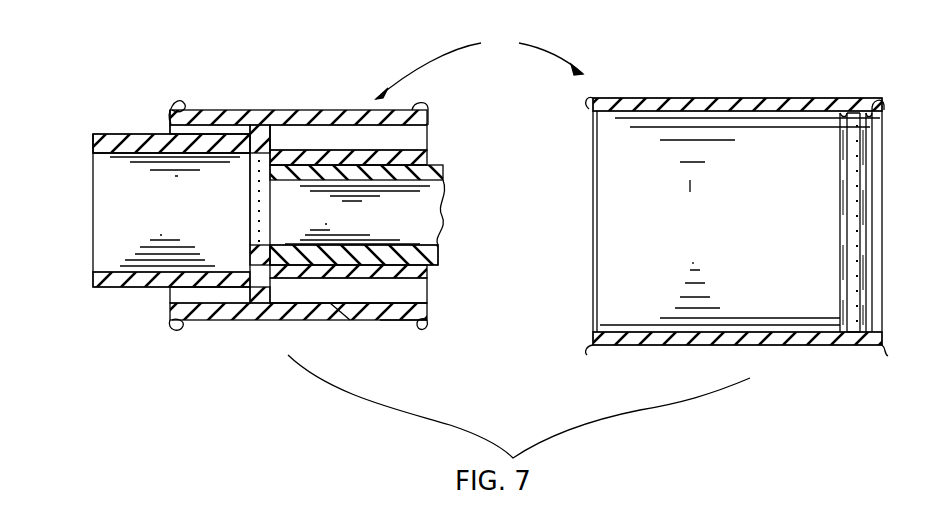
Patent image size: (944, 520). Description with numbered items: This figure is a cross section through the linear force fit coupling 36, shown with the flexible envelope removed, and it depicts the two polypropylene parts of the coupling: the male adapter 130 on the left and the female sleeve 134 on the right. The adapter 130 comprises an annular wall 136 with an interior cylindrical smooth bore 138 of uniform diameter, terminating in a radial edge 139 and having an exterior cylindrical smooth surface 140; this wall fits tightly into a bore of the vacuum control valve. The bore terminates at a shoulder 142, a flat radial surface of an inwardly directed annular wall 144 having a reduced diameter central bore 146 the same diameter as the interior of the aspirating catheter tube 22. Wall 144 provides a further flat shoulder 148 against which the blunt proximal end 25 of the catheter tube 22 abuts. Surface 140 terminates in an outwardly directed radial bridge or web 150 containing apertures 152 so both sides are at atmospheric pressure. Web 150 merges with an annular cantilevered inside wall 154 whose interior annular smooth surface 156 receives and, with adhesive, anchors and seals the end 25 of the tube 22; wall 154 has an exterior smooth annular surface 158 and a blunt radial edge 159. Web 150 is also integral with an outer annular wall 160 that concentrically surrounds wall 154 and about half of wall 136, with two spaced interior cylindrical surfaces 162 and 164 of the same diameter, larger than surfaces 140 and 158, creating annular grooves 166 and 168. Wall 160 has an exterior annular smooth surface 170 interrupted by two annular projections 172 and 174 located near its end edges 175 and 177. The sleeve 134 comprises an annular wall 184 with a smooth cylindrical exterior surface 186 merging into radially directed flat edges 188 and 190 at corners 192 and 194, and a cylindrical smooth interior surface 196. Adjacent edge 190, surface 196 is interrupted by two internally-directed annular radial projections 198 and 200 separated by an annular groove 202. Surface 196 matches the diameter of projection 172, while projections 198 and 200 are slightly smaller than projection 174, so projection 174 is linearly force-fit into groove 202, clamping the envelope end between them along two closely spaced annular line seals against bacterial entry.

The aspirating catheter tube 22 is at (433, 258).
The proximal end of the aspirating catheter tube 25 is at (290, 184).
The linear force fit coupling 36 is at (479, 65).
The male adapter 130 is at (142, 298).
The female sleeve 134 is at (684, 92).
The annular wall 136 is at (113, 146).
The interior cylindrical smooth bore 138 is at (135, 152).
The radial edge 139 is at (93, 144).
The exterior cylindrical smooth surface 140 is at (112, 287).
The shoulder 142 is at (250, 170).
The inwardly directed annular wall 144 is at (256, 250).
The central bore 146 is at (258, 195).
The flat shoulder 148 is at (276, 243).
The radial bridge or web 150 is at (280, 293).
The apertures 152 is at (270, 135).
The annular cantilevered inside wall 154 is at (408, 142).
The interior annular smooth surface 156 is at (420, 270).
The exterior smooth annular surface 158 is at (320, 152).
The blunt radial edge 159 is at (408, 162).
The annular wall 160 is at (238, 110).
The interior cylindrical surface 162 is at (205, 129).
The interior cylindrical surface 164 is at (410, 300).
The annular groove 166 is at (172, 298).
The annular groove 168 is at (410, 125).
The exterior annular smooth surface 170 is at (242, 320).
The annular projection 172 is at (180, 102).
The annular projection 174 is at (420, 322).
The end edge 175 is at (170, 108).
The end edge 177 is at (428, 320).
The annular wall 184 is at (762, 345).
The smooth cylindrical exterior surface 186 is at (806, 99).
The radially directed flat edge 188 is at (593, 345).
The radially directed flat edge 190 is at (884, 344).
The corner 192 is at (592, 98).
The corner 194 is at (884, 102).
The cylindrical smooth interior surface 196 is at (693, 244).
The internally-directed annular radial projection 198 is at (842, 200).
The internally-directed annular radial projection 200 is at (866, 162).
The annular groove 202 is at (856, 234).